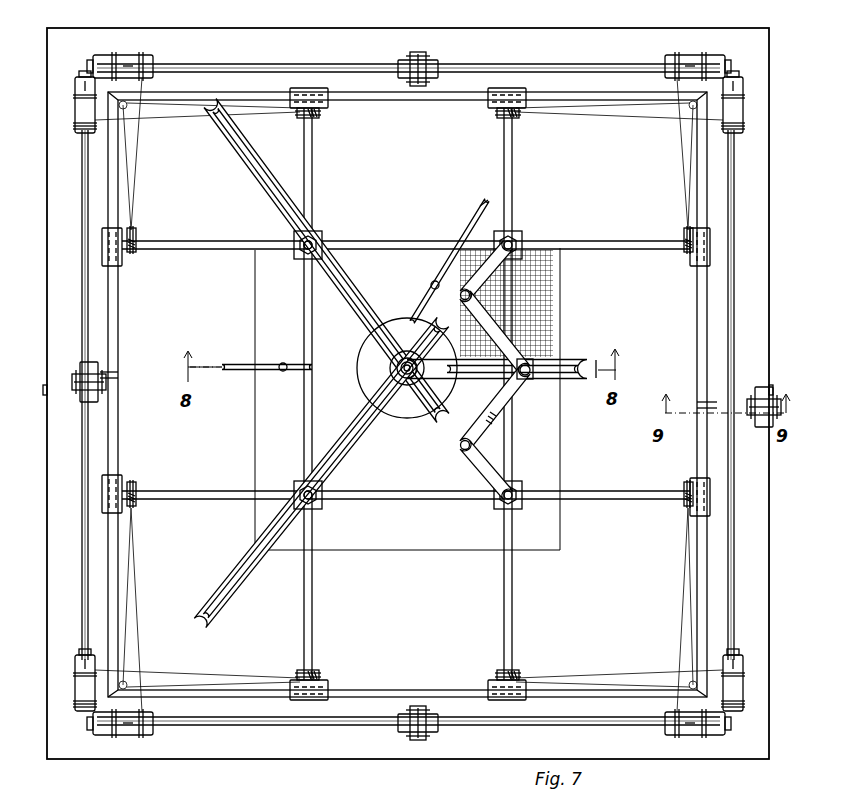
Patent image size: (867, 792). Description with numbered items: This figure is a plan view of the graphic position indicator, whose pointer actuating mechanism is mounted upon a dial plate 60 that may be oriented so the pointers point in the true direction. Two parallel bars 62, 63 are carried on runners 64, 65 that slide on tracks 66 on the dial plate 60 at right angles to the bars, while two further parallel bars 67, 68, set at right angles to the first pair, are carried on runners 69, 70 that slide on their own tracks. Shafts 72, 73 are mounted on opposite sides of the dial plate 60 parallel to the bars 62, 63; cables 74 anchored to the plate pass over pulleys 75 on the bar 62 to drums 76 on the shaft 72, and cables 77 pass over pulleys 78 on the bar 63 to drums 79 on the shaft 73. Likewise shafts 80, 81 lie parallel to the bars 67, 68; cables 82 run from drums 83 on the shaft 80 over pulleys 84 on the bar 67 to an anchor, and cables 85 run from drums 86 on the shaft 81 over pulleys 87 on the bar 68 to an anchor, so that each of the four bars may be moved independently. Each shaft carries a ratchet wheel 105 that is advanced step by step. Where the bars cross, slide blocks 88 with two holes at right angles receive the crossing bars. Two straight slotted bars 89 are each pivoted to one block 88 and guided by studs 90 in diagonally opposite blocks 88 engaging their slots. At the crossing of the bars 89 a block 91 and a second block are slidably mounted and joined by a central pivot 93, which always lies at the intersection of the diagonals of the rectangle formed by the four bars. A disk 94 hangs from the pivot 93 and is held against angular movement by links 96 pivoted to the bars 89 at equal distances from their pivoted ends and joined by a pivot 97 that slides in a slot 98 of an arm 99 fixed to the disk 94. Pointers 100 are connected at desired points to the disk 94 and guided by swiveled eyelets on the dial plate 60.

The dial plate 60 is at (760, 301).
The parallel bar 62 is at (608, 238).
The parallel bar 63 is at (206, 489).
The runner 64 is at (123, 266).
The runner 65 is at (122, 474).
The track 66 is at (116, 347).
The parallel bar 67 is at (512, 155).
The parallel bar 68 is at (312, 614).
The runner 69 is at (490, 110).
The runner 70 is at (327, 112).
The shaft 72 is at (515, 55).
The shaft 73 is at (566, 730).
The cable 74 is at (130, 170).
The pulley 75 is at (138, 230).
The drum 76 is at (148, 60).
The cable 77 is at (137, 604).
The pulley 78 is at (137, 484).
The drum 79 is at (153, 736).
The shaft 80 is at (733, 510).
The shaft 81 is at (80, 572).
The cable 82 is at (638, 126).
The drum 83 is at (738, 132).
The pulley 84 is at (519, 120).
The cable 85 is at (162, 120).
The drum 86 is at (78, 134).
The pulley 87 is at (316, 122).
The slide block 88 is at (326, 238).
The slotted bar 89 is at (360, 292).
The stud 90 is at (296, 258).
The block 91 is at (408, 382).
The central pivot 93 is at (440, 388).
The disk 94 is at (358, 384).
The link 96 is at (486, 338).
The pivot 97 is at (528, 378).
The slot 98 is at (574, 366).
The arm 99 is at (570, 356).
The pointer 100 is at (468, 212).
The ratchet wheel 105 is at (416, 54).